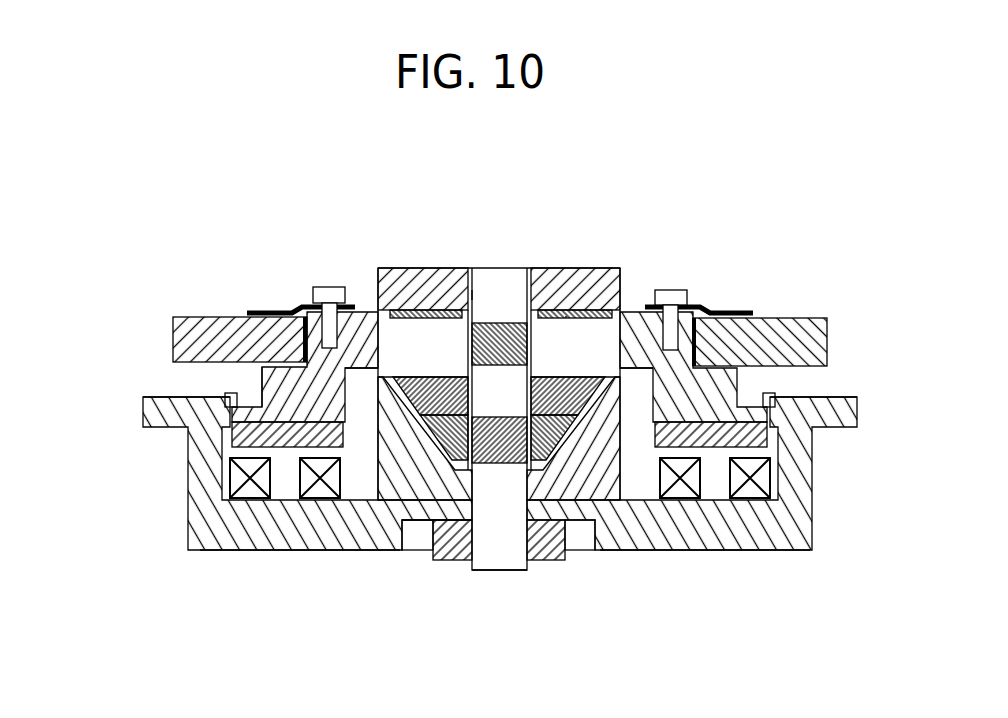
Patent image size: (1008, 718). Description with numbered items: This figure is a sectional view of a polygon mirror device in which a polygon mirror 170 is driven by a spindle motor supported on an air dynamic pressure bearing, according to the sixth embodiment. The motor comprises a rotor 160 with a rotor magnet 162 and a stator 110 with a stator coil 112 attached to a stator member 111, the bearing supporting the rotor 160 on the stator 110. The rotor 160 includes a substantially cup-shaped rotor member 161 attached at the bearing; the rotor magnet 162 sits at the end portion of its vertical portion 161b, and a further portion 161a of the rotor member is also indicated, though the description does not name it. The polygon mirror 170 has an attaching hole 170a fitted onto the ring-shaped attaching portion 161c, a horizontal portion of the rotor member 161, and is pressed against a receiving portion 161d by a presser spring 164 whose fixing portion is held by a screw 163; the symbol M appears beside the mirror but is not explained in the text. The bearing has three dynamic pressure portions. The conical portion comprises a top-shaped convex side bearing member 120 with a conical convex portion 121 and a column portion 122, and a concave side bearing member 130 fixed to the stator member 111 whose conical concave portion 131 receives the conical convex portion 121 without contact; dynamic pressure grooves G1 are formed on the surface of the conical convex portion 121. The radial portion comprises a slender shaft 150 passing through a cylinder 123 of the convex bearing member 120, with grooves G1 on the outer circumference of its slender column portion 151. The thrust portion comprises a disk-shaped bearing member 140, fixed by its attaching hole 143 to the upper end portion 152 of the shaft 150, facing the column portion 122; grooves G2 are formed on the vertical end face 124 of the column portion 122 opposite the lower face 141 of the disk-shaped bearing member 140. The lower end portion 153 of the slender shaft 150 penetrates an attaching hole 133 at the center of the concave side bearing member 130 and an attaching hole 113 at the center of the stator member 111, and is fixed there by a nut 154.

The stator 110 is at (211, 527).
The stator member 111 is at (277, 555).
The stator coil 112 is at (738, 520).
The attaching hole 113 is at (560, 530).
The top-shaped convex side bearing member 120 is at (358, 503).
The conical convex portion 121 is at (401, 526).
The column portion 122 is at (652, 294).
The cylinder 123 is at (416, 535).
The vertical end face 124 is at (433, 285).
The concave side bearing member 130 is at (529, 527).
The conical concave portion 131 is at (620, 420).
The attaching hole 133 is at (588, 515).
The disk-shaped bearing member 140 is at (492, 311).
The lower face 141 is at (410, 287).
The attaching hole 143 is at (545, 295).
The slender shaft 150 is at (586, 422).
The slender column portion 151 is at (608, 312).
The upper end portion 152 is at (497, 290).
The lower end portion 153 is at (500, 545).
The nut 154 is at (460, 553).
The rotor 160 is at (236, 453).
The rotor member 161 is at (707, 372).
The core inner portion 161a is at (355, 448).
The vertical portion 161b is at (143, 410).
The ring-shaped attaching portion 161c is at (176, 340).
The receiving portion 161d is at (255, 375).
The rotor magnet 162 is at (755, 432).
The screw 163 is at (326, 292).
The presser spring 164 is at (253, 309).
The polygon mirror 170 is at (806, 330).
The attaching hole 170a is at (750, 312).
The recording medium M is at (828, 324).
The dynamic pressure grooves G1 is at (529, 285).
The dynamic pressure grooves G2 is at (566, 310).